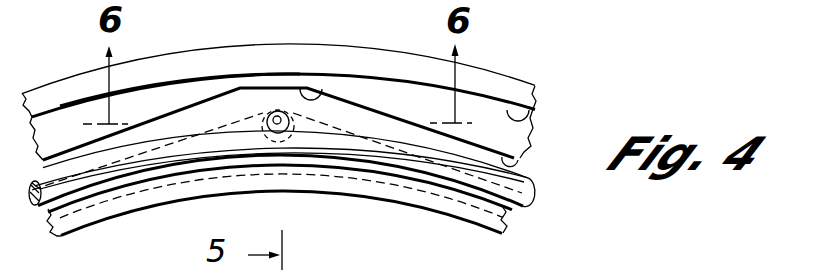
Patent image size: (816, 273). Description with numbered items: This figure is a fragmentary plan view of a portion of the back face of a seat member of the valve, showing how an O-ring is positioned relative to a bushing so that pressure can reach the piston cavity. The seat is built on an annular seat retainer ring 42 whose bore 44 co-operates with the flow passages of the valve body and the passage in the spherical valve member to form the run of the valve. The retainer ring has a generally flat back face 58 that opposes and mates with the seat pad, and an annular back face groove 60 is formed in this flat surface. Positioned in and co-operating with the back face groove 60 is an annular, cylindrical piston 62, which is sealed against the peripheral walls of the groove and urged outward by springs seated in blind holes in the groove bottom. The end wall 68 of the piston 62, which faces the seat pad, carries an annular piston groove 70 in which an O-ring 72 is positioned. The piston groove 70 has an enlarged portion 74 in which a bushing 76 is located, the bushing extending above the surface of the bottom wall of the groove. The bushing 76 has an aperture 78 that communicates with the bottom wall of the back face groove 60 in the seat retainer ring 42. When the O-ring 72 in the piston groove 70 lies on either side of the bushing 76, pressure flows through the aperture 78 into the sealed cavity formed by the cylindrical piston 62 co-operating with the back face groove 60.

The seat retainer ring 42 is at (361, 50).
The bore 44 is at (373, 198).
The flat back face 58 is at (484, 86).
The back face groove 60 is at (530, 119).
The piston 62 is at (515, 134).
The end wall 68 is at (167, 90).
The piston groove 70 is at (519, 163).
The O-ring 72 is at (337, 157).
The enlarged portion 74 is at (305, 90).
The bushing 76 is at (285, 111).
The aperture 78 is at (274, 119).